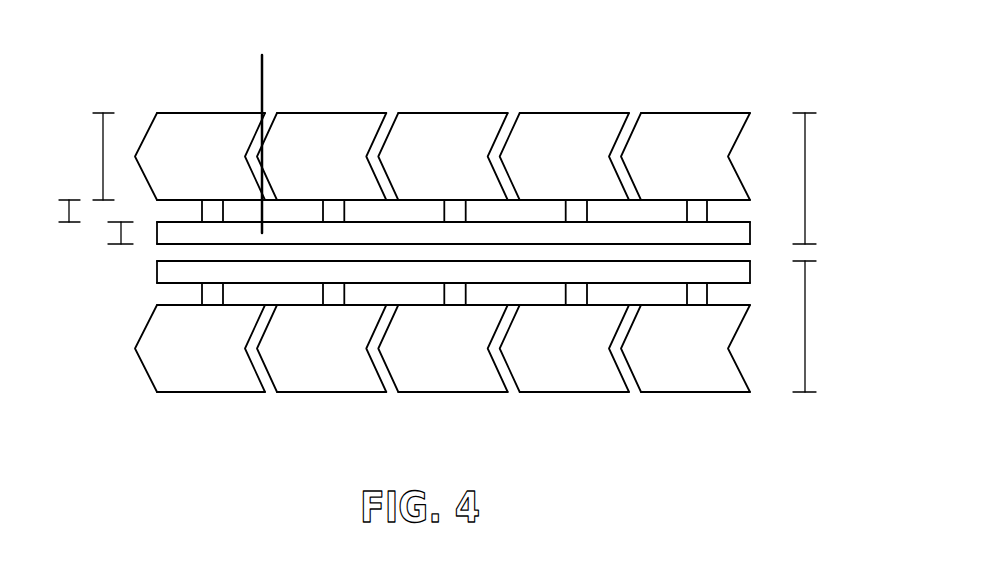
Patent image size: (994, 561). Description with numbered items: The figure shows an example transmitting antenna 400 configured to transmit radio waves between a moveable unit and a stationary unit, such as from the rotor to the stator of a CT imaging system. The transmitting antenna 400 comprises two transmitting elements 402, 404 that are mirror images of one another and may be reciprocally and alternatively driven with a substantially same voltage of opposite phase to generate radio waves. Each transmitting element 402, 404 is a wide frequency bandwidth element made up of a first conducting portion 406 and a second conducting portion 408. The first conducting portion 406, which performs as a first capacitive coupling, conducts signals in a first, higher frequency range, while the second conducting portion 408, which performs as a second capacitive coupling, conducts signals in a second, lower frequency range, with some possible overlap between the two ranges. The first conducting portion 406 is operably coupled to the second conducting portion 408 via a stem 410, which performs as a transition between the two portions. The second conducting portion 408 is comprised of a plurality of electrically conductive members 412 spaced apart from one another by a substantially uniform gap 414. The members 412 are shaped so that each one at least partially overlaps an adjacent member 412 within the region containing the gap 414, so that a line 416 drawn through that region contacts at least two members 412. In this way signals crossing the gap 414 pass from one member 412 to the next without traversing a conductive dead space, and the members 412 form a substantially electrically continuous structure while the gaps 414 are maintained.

The transmitting antenna 400 is at (485, 200).
The transmitting element 402 is at (485, 140).
The transmitting element 404 is at (505, 326).
The first conducting portion 406 is at (83, 244).
The second conducting portion 408 is at (73, 156).
The stem 410 is at (40, 209).
The electrically conductive member 412 is at (422, 74).
The gap 414 is at (443, 133).
The line 416 is at (227, 142).